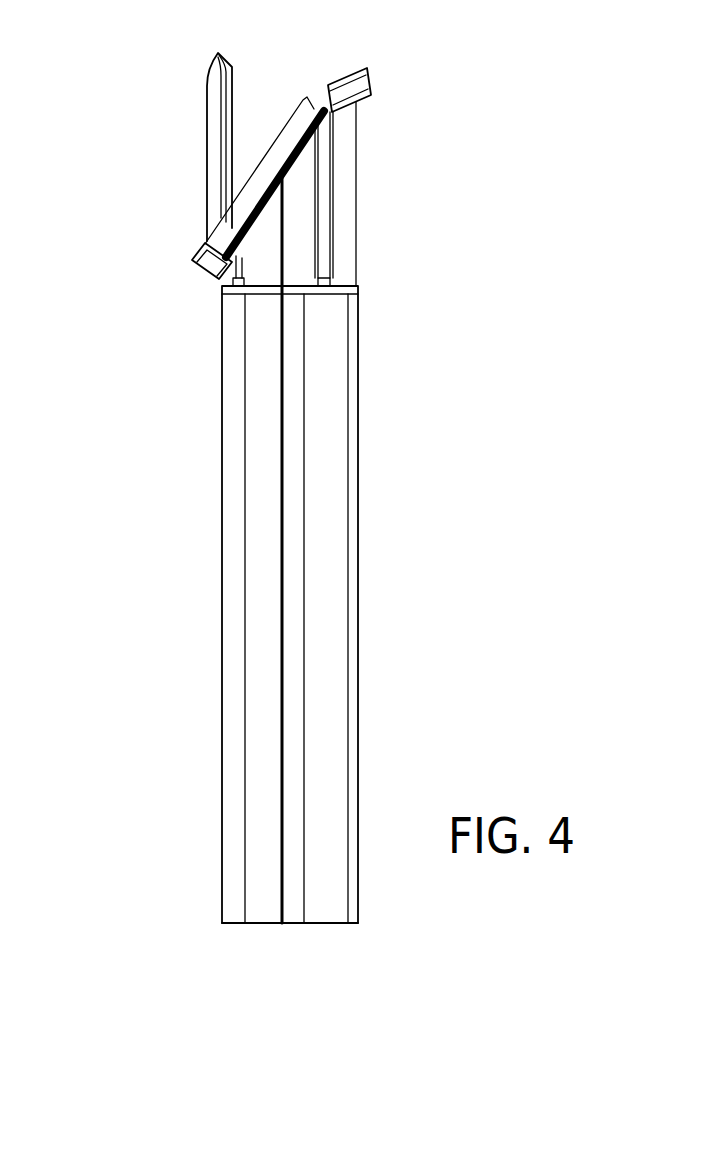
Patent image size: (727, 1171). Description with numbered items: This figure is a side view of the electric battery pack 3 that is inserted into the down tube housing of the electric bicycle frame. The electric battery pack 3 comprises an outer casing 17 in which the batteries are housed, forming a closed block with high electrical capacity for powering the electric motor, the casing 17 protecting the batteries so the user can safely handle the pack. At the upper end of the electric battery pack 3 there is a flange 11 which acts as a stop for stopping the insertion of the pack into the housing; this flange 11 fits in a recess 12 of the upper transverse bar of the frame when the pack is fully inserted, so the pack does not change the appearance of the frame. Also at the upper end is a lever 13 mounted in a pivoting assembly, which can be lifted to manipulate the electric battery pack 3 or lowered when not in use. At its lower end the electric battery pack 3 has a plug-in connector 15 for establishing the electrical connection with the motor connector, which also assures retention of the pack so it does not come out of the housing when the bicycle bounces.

The electric battery pack 3 is at (184, 530).
The flange 11 is at (371, 92).
The recess 12 is at (288, 152).
The lever 13 is at (218, 165).
The plug-in connector 15 is at (244, 940).
The outer casing 17 is at (330, 432).